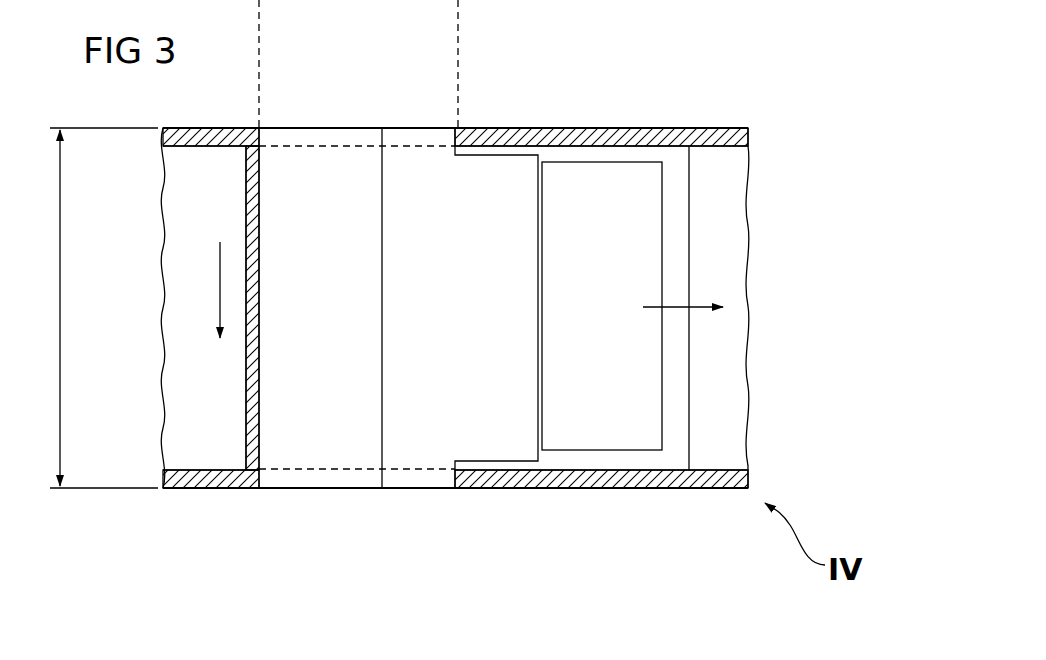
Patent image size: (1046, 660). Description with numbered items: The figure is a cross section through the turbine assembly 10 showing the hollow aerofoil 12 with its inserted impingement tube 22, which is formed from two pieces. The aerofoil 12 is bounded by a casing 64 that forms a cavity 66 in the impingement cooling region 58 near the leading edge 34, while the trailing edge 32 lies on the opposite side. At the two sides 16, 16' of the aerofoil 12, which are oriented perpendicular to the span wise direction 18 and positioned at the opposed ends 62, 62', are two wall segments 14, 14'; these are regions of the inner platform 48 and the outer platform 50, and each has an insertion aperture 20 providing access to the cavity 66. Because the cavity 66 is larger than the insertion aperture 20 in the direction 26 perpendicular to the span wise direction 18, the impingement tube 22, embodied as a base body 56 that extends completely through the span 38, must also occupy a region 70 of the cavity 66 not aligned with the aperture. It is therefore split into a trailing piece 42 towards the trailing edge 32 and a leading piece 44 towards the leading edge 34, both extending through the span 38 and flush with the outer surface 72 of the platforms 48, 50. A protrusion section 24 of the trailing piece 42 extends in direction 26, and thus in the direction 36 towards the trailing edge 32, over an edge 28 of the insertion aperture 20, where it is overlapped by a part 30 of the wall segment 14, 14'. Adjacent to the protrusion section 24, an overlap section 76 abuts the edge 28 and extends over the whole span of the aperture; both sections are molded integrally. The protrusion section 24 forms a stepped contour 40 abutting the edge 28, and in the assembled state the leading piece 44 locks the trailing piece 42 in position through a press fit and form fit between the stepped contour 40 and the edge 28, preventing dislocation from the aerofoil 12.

The turbine assembly 10 is at (784, 88).
The hollow aerofoil 12 is at (429, 312).
The wall segment 14 is at (612, 262).
The wall segment 14' is at (602, 519).
The side 16 is at (797, 308).
The side 16' is at (809, 444).
The span wise direction 18 is at (220, 292).
The insertion aperture 20 is at (343, 292).
The impingement tube 22 is at (300, 497).
The protrusion section 24 is at (540, 292).
The direction 26 is at (697, 306).
The edge 28 is at (453, 133).
The part 30 is at (612, 262).
The trailing edge 32 is at (761, 303).
The leading edge 34 is at (155, 345).
The direction 36 is at (704, 310).
The span 38 is at (61, 215).
The stepped contour 40 is at (455, 158).
The trailing piece 42 is at (369, 292).
The leading piece 44 is at (320, 478).
The inner platform 48 is at (708, 137).
The outer platform 50 is at (692, 480).
The base body 56 is at (388, 497).
The impingement cooling region 58 is at (251, 368).
The end 62 is at (421, 66).
The end 62' is at (463, 553).
The casing 64 is at (602, 519).
The cavity 66 is at (540, 292).
The region 70 is at (549, 151).
The outer surface 72 is at (205, 491).
The overlap section 76 is at (407, 135).